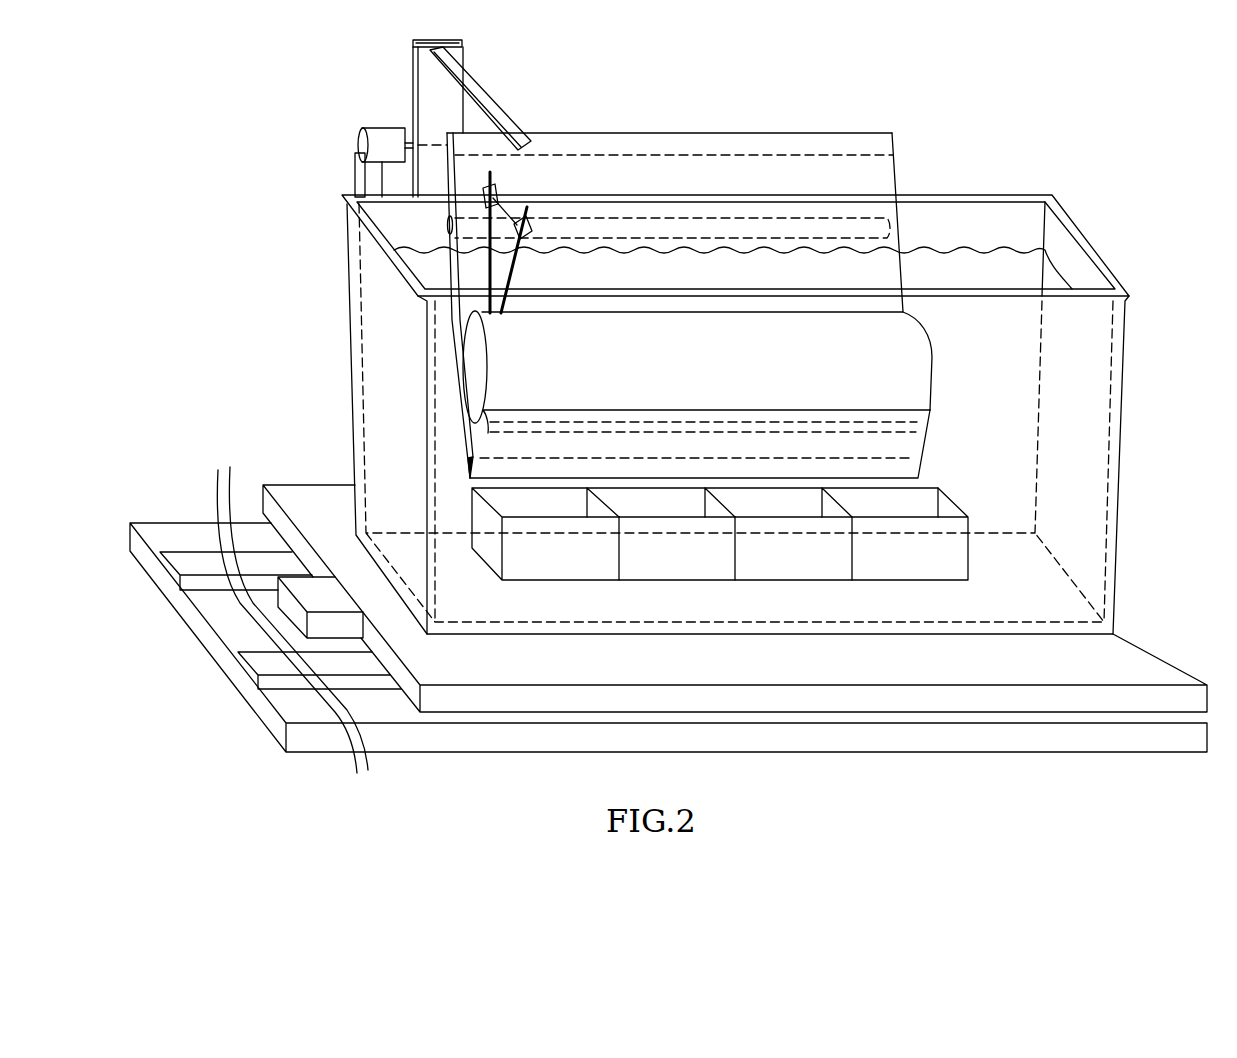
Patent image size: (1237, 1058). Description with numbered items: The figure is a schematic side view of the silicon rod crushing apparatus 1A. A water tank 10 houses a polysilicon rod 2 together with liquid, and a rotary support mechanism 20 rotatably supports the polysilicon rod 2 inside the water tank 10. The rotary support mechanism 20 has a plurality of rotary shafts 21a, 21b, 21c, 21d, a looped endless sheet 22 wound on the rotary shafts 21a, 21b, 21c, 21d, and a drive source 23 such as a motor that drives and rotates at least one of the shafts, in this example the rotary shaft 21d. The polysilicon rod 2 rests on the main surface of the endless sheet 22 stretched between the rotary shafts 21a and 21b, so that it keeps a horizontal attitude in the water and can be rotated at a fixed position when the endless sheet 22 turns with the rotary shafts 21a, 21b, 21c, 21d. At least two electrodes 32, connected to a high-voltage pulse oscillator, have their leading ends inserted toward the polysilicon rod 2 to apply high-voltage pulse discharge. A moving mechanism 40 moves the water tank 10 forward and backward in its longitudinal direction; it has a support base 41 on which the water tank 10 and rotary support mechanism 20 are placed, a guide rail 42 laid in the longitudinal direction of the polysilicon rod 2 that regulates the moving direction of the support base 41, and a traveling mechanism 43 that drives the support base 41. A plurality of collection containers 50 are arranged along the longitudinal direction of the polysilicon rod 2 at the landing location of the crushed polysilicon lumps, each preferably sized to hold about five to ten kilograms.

The silicon rod crushing apparatus 1A is at (690, 80).
The polysilicon rod 2 is at (913, 357).
The water tank 10 is at (348, 264).
The rotary support mechanism 20 is at (812, 122).
The rotary shaft 21a is at (932, 413).
The rotary shaft 21b is at (913, 470).
The rotary shaft 21c is at (880, 227).
The rotary shaft 21d is at (882, 148).
The endless sheet 22 is at (878, 275).
The drive source 23 is at (360, 147).
The electrodes 32 is at (518, 272).
The moving mechanism 40 is at (290, 436).
The support base 41 is at (284, 497).
The guide rail 42 is at (262, 660).
The traveling mechanism 43 is at (325, 596).
The collection containers 50 is at (562, 570).